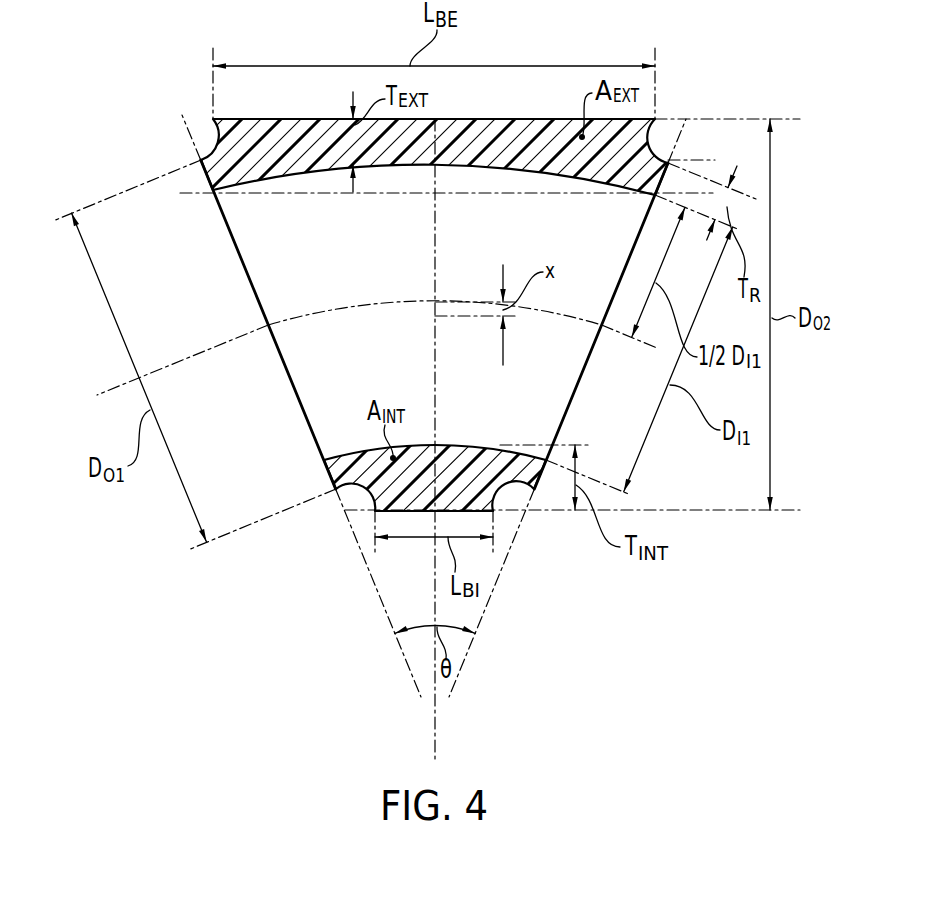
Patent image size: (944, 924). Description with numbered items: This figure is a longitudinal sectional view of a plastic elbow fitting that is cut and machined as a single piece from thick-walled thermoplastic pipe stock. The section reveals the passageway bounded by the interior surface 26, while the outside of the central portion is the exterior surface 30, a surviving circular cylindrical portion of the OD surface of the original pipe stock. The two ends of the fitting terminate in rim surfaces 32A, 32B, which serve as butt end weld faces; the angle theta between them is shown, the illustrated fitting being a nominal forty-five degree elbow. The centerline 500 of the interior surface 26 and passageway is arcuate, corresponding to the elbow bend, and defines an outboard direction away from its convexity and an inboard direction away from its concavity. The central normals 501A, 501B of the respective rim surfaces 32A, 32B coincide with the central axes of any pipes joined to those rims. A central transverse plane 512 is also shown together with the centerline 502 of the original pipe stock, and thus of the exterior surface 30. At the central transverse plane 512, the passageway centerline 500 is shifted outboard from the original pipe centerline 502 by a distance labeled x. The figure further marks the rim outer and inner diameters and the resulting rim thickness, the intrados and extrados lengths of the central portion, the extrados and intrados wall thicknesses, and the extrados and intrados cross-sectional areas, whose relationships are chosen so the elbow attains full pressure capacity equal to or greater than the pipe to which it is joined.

The exterior surface 30 is at (478, 114).
The rim surface 32A is at (245, 269).
The rim surface 32B is at (569, 407).
The interior surface 26 is at (333, 420).
The centerline 500 is at (317, 313).
The central normal 501A is at (217, 347).
The central normal 501B is at (653, 347).
The centerline 502 is at (462, 317).
The central transverse plane 512 is at (436, 736).